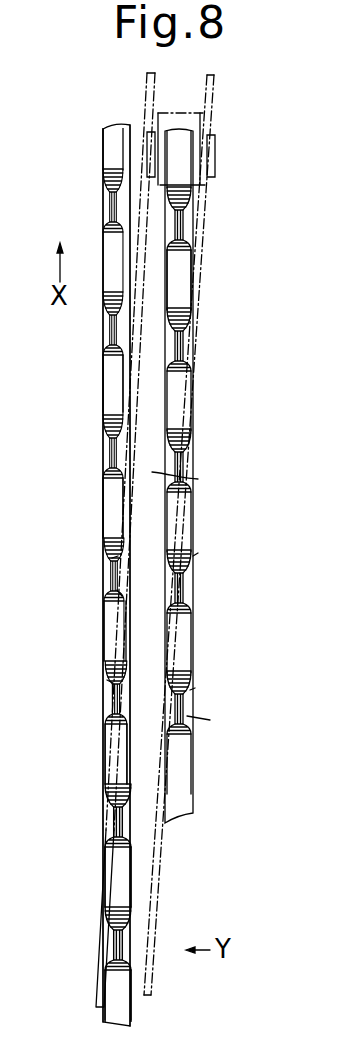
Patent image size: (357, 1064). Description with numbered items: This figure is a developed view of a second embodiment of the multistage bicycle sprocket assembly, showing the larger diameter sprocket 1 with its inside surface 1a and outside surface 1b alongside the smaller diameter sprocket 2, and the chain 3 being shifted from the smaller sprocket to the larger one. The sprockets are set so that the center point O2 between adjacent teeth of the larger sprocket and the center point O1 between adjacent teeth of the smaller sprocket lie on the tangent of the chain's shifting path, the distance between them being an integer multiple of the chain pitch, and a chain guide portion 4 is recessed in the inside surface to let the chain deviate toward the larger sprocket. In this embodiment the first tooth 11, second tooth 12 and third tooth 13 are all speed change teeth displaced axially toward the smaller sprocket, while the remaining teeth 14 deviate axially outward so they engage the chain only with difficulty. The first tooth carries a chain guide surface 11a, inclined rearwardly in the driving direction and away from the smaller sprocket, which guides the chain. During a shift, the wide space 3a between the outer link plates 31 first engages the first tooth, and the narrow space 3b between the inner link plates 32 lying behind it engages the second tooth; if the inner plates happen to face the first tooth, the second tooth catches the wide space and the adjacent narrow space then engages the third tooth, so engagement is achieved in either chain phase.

The larger diameter sprocket 1 is at (104, 170).
The inside surface 1a is at (134, 131).
The outside surface 1b is at (104, 148).
The chain guide portion 4 is at (127, 338).
The center point between adjacent teeth of smaller sprocket O1 is at (179, 284).
The center point between adjacent teeth of larger sprocket O2 is at (120, 514).
The smaller diameter sprocket 2 is at (193, 462).
The chain 3 is at (198, 630).
The space between outer link plates 3a is at (193, 578).
The narrow space between inner link plates 3b is at (198, 479).
The outer link plates 31 is at (112, 558).
The inner link plate 32 is at (107, 680).
The first tooth 11 is at (118, 572).
The chain guide surface 11a is at (120, 594).
The second tooth 12 is at (117, 704).
The third tooth 13 is at (117, 826).
The teeth 14 is at (113, 945).